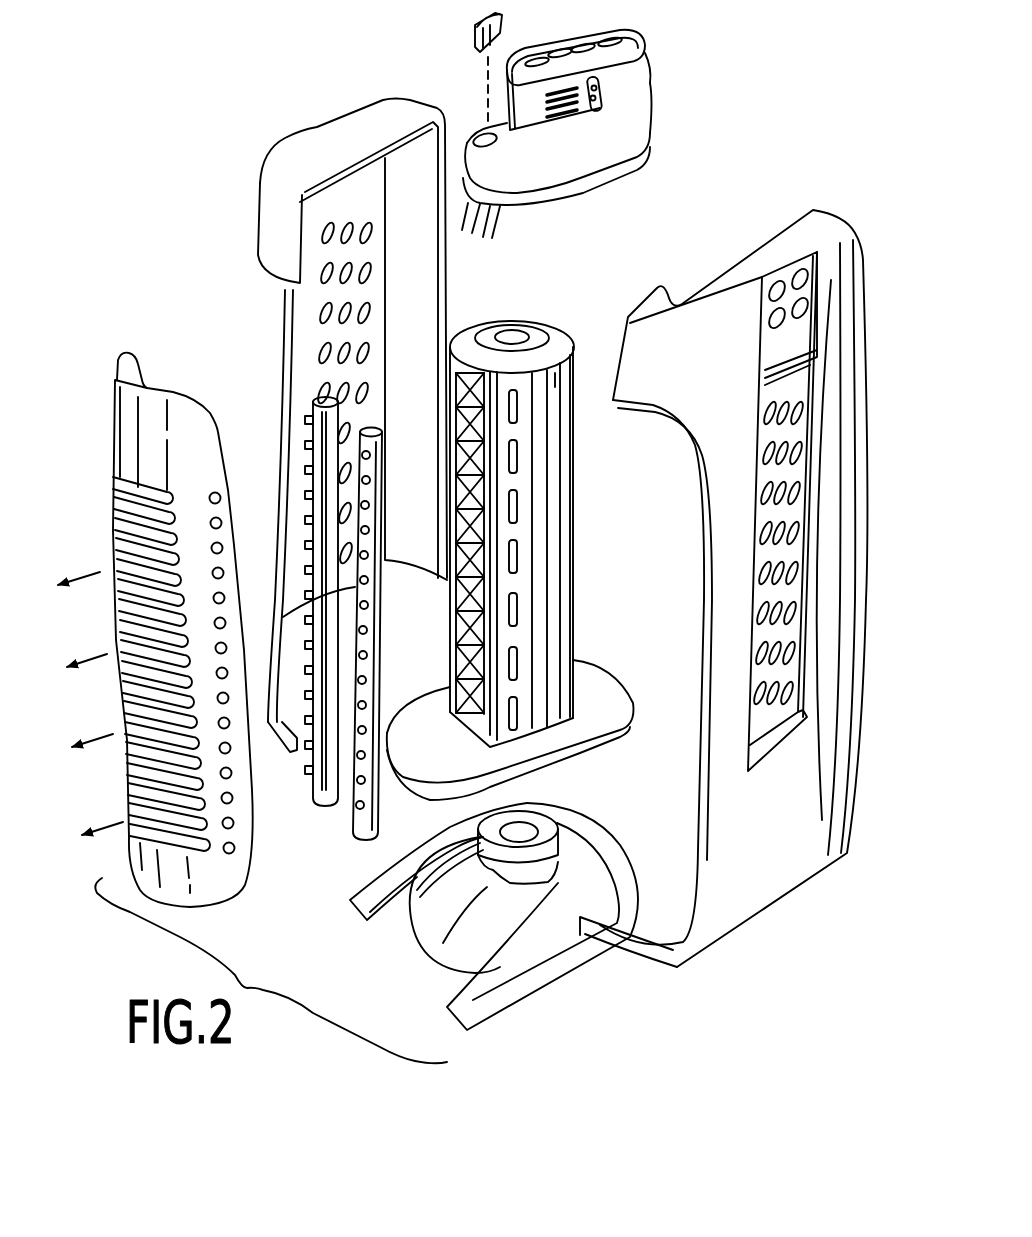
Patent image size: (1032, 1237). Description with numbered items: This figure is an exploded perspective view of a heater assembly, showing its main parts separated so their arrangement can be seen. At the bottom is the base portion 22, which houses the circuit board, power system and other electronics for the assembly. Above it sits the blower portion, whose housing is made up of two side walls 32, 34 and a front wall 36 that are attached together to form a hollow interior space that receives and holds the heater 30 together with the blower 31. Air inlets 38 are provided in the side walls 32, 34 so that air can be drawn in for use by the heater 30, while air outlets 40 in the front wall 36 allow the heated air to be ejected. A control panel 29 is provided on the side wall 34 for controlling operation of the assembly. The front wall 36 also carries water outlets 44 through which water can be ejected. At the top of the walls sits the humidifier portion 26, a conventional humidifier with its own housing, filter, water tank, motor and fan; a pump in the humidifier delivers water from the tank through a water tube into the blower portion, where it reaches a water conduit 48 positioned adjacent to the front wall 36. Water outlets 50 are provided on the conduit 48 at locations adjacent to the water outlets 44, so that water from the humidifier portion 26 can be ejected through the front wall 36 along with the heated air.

The base portion 22 is at (550, 953).
The humidifier portion 26 is at (586, 117).
The control panel 29 is at (816, 305).
The heater 30 is at (518, 536).
The blower 31 is at (483, 490).
The side wall 32 is at (282, 143).
The side wall 34 is at (750, 862).
The front wall 36 is at (163, 401).
The air inlets 38 is at (380, 284).
The air outlets 40 is at (133, 556).
The water outlets 44 is at (226, 598).
The water conduit 48 is at (383, 683).
The water outlets 50 is at (362, 457).